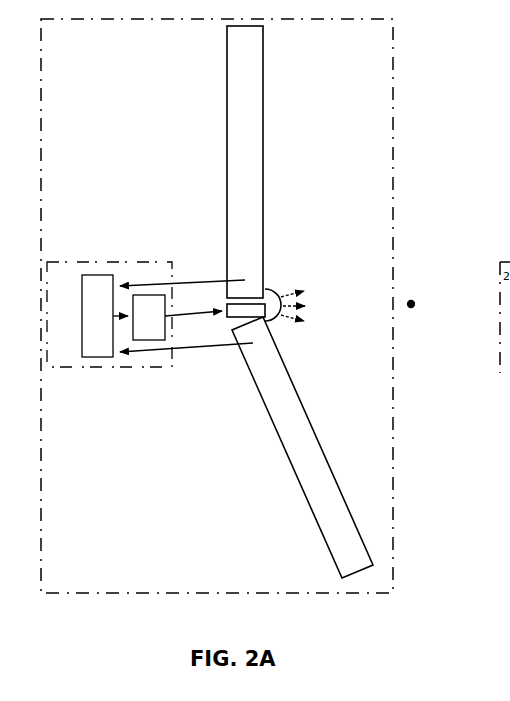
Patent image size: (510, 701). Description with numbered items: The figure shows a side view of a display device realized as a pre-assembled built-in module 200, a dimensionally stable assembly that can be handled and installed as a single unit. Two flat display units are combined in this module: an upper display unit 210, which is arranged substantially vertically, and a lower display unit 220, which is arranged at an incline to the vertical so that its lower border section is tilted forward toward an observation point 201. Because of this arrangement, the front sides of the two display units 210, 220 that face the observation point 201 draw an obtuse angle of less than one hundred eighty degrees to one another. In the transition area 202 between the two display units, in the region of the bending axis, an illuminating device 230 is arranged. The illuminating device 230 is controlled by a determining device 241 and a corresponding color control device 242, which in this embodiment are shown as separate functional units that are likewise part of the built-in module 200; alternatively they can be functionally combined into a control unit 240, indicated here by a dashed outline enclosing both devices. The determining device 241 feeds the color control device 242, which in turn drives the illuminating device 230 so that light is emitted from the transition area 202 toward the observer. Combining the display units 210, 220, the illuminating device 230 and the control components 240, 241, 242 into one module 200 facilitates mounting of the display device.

The pre-assembled built-in module 200 is at (393, 112).
The observation point 201 is at (411, 300).
The transition area 202 is at (281, 277).
The upper display unit 210 is at (245, 162).
The lower display unit 220 is at (302, 447).
The illuminating device 230 is at (278, 290).
The control unit 240 is at (109, 314).
The determining device 241 is at (167, 316).
The color control device 242 is at (167, 317).